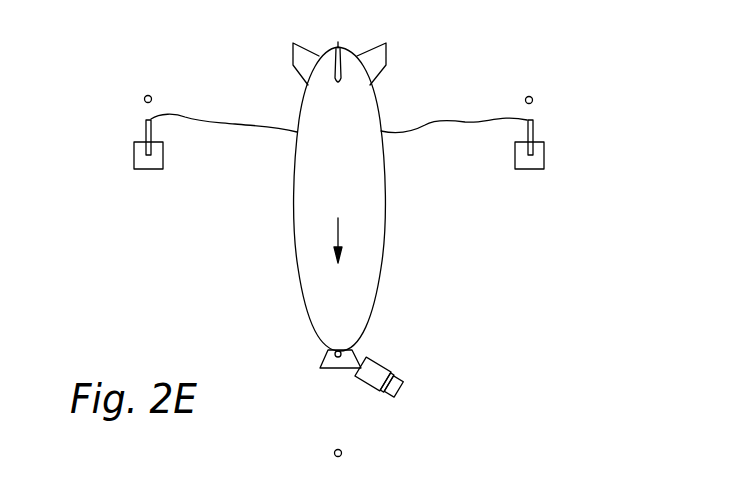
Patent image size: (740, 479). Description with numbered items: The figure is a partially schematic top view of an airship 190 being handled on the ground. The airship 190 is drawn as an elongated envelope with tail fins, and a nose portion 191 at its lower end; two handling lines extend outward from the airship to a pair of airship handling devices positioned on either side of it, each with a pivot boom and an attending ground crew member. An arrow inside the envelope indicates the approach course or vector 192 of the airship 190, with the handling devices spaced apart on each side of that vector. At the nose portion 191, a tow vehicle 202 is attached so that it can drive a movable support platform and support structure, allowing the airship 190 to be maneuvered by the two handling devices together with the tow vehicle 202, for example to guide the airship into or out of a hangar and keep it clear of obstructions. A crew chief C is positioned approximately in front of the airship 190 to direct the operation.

The airship 190 is at (387, 193).
The nose portion 191 is at (330, 352).
The approach course or vector 192 is at (338, 238).
The tow vehicle 202 is at (383, 363).
The crew chief C is at (334, 454).